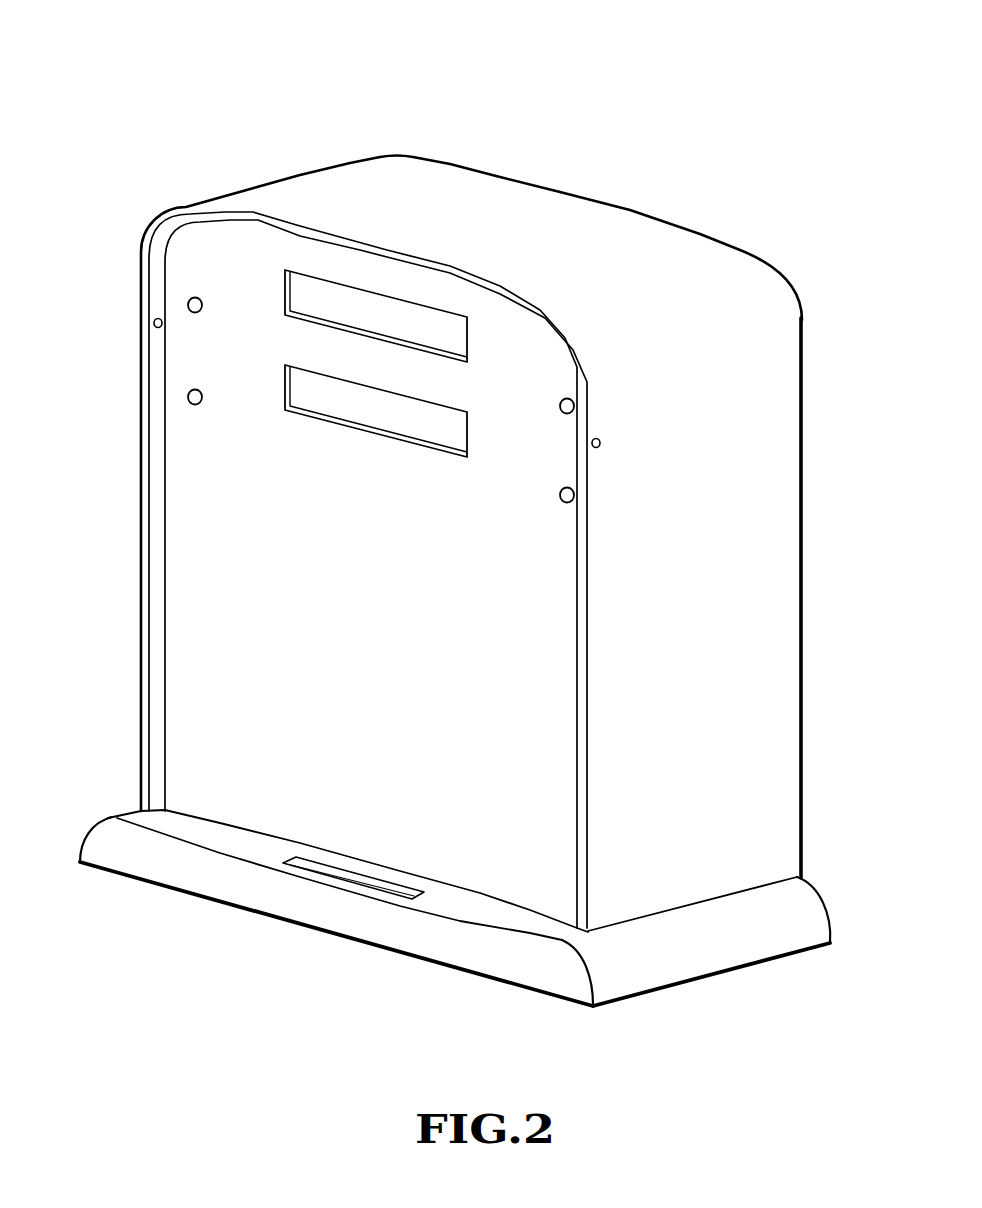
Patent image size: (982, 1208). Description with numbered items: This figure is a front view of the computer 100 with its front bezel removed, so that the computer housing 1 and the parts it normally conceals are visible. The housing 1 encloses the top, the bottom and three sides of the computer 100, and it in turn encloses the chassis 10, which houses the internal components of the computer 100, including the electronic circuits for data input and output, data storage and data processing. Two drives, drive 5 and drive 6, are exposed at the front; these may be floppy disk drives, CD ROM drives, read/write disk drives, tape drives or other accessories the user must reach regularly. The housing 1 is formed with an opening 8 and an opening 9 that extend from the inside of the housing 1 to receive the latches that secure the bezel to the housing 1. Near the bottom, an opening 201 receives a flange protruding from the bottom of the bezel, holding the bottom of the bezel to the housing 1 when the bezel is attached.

The computer 100 is at (601, 62).
The housing 1 is at (787, 737).
The chassis 10 is at (228, 606).
The drive 5 is at (320, 306).
The drive 6 is at (368, 400).
The opening 9 is at (178, 330).
The opening 8 is at (610, 446).
The opening 201 is at (327, 875).